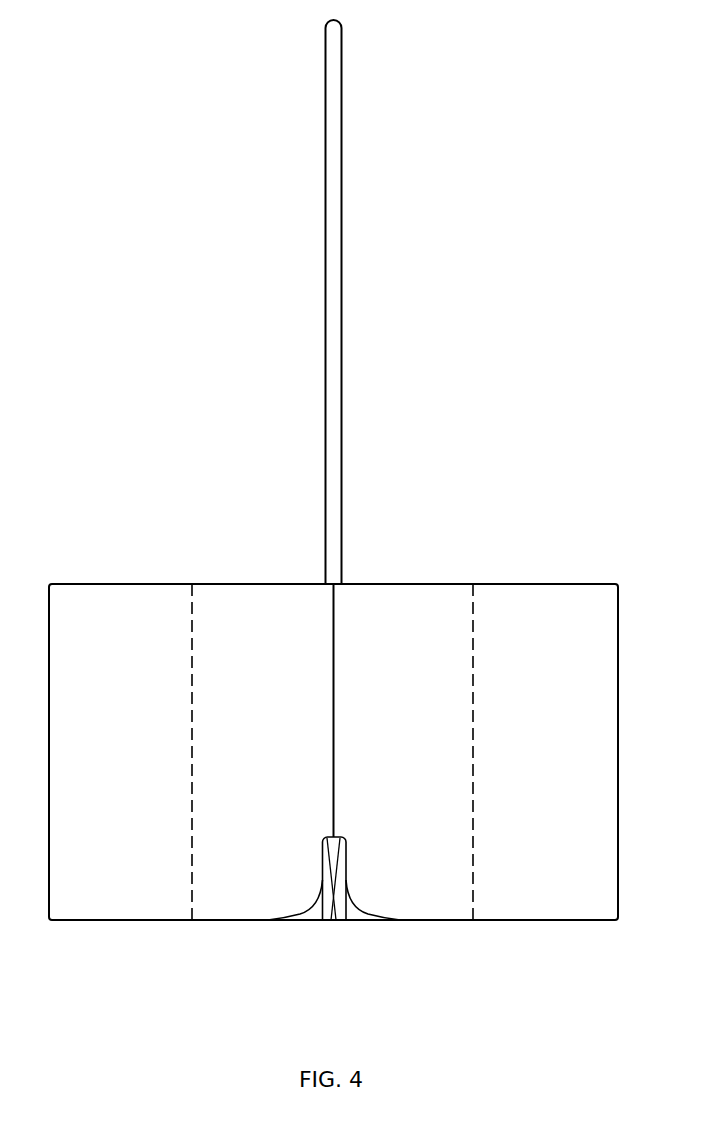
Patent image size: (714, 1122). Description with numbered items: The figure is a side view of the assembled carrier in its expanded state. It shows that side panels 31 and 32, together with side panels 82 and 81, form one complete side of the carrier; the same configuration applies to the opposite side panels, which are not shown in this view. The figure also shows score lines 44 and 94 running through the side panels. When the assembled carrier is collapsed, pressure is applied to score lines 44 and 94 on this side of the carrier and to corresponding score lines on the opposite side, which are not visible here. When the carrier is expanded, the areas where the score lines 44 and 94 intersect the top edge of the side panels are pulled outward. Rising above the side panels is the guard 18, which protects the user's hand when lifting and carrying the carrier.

The guard 18 is at (399, 164).
The side panel 31 is at (121, 752).
The side panel 32 is at (262, 752).
The side panel 82 is at (403, 752).
The side panel 81 is at (545, 752).
The score line 44 is at (192, 884).
The score line 94 is at (473, 884).